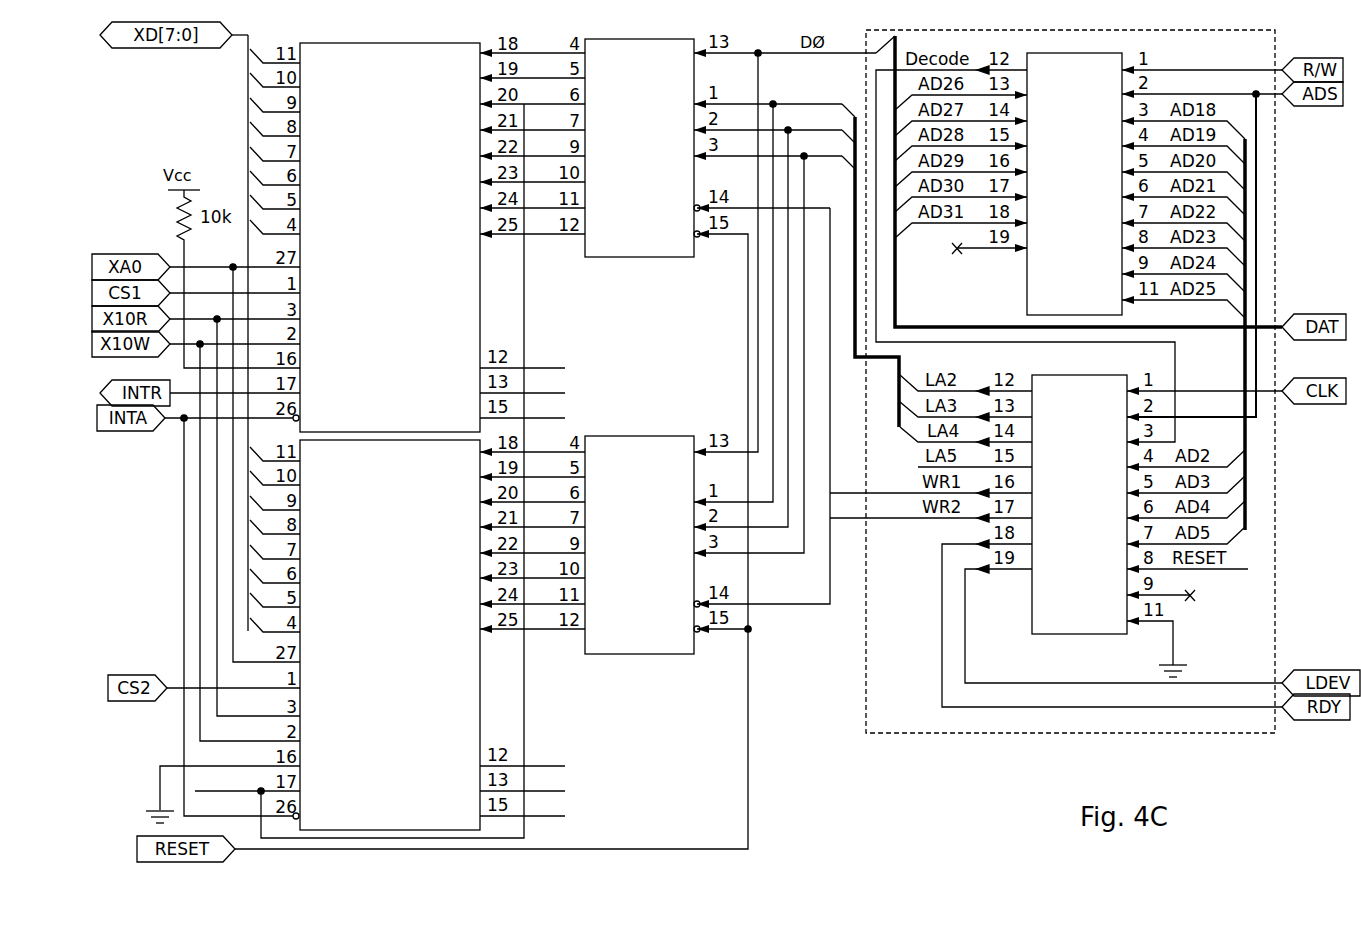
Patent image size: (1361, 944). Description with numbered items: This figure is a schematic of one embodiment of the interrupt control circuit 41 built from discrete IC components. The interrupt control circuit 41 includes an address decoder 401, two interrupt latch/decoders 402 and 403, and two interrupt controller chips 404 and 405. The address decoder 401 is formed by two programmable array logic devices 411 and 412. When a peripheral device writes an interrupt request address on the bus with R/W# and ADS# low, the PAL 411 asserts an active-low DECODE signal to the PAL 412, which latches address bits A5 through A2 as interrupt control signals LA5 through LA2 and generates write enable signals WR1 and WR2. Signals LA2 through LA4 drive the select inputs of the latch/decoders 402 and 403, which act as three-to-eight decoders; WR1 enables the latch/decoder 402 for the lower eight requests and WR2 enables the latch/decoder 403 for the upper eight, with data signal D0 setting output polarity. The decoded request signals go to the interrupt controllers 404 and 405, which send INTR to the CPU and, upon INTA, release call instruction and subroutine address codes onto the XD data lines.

The interrupt control circuit 41 is at (857, 770).
The address decoder 401 is at (1033, 734).
The interrupt latch/decoder 402 is at (650, 258).
The interrupt latch/decoder 403 is at (665, 655).
The interrupt controller 404 is at (389, 341).
The interrupt controller 405 is at (389, 737).
The programmable array logic device 411 is at (1027, 267).
The programmable array logic device 412 is at (1087, 634).